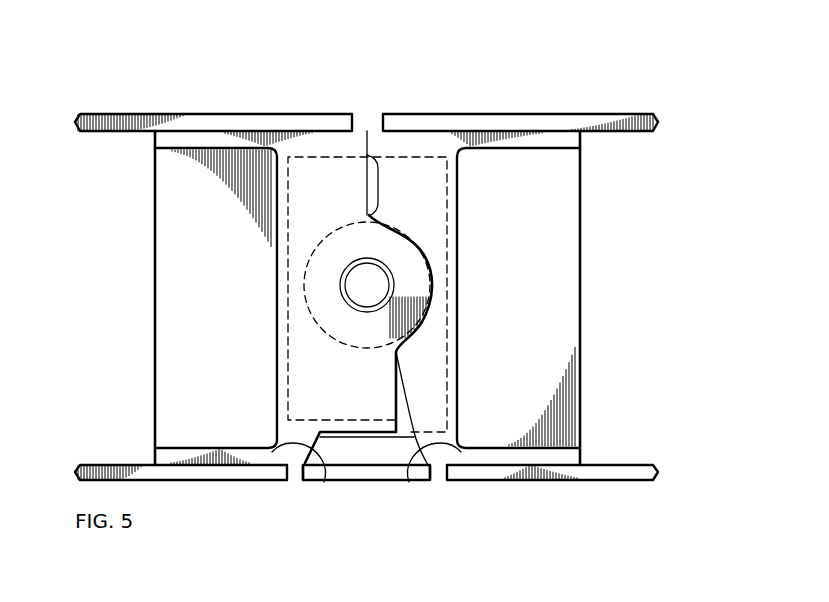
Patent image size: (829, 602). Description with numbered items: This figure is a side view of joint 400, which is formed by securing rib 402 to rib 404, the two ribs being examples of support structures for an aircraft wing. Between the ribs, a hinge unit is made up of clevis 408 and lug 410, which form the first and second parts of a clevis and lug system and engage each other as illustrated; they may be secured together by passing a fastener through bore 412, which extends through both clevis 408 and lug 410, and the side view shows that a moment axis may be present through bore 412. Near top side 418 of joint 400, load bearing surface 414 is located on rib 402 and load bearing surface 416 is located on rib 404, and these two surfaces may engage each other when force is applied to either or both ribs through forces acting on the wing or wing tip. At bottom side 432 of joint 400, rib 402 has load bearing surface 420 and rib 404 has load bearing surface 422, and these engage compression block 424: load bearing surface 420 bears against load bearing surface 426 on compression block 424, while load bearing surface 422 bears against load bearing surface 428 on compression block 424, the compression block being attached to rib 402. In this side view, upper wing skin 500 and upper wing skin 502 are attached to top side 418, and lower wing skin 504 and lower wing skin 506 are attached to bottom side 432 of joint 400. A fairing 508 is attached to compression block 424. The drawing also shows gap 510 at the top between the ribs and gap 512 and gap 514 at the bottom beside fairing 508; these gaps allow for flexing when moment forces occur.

The joint 400 is at (106, 68).
The rib 402 is at (150, 312).
The rib 404 is at (583, 306).
The clevis 408 is at (413, 240).
The lug 410 is at (427, 352).
The bore 412 is at (348, 287).
The load bearing surface 414 is at (362, 133).
The load bearing surface 416 is at (370, 146).
The top side 418 is at (217, 113).
The load bearing surface 420 is at (324, 482).
The load bearing surface 422 is at (410, 482).
The compression block 424 is at (360, 440).
The load bearing surface 426 is at (275, 448).
The load bearing surface 428 is at (460, 447).
The bottom side 432 is at (594, 482).
The upper wing skin 500 is at (100, 132).
The upper wing skin 502 is at (632, 132).
The lower wing skin 504 is at (100, 465).
The lower wing skin 506 is at (632, 463).
The fairing 508 is at (372, 482).
The gap 510 is at (358, 110).
The gap 512 is at (290, 486).
The gap 514 is at (444, 486).